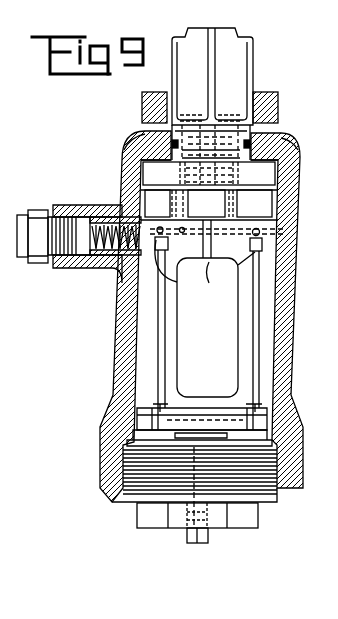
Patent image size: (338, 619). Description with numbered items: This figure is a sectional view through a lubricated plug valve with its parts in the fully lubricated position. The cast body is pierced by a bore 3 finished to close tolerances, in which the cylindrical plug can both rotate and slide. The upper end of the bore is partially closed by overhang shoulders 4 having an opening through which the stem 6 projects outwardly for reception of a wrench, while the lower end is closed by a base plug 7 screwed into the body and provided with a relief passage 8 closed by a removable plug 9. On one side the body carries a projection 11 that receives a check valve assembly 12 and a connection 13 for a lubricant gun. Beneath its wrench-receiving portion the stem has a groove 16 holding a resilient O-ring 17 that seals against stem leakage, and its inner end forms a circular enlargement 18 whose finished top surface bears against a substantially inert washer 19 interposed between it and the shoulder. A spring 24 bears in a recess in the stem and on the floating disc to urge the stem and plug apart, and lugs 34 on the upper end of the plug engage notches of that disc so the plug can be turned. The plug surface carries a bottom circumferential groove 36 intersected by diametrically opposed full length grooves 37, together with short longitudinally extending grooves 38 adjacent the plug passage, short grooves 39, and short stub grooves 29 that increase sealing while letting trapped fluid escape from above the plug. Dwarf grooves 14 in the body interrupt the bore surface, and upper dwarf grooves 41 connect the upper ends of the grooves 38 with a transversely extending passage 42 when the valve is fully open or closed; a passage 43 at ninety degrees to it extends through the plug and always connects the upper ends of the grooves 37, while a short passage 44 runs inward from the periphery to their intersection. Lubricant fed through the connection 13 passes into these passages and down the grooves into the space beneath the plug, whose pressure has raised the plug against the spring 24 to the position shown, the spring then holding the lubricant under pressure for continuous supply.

The bore 3 is at (300, 168).
The overhang shoulders 4 is at (147, 135).
The stem 6 is at (253, 74).
The base plug 7 is at (137, 516).
The relief passage 8 is at (201, 505).
The removable plug 9 is at (187, 538).
The projection 11 is at (83, 206).
The check valve assembly 12 is at (105, 216).
The connection 13 is at (43, 208).
The dwarf grooves 14 is at (162, 406).
The groove 16 is at (273, 136).
The O-ring 17 is at (164, 134).
The circular enlargement 18 is at (209, 173).
The inert washer 19 is at (143, 154).
The spring 24 is at (239, 176).
The stub grooves 29 is at (304, 249).
The lugs 34 is at (209, 205).
The bottom circumferential groove 36 is at (197, 408).
The full length grooves 37 is at (165, 330).
The short longitudinally extending grooves 38 is at (250, 339).
The short grooves 39 is at (199, 431).
The upper dwarf grooves 41 is at (205, 261).
The transversely extending passage 42 is at (260, 231).
The passage 43 is at (166, 294).
The short passage 44 is at (203, 250).